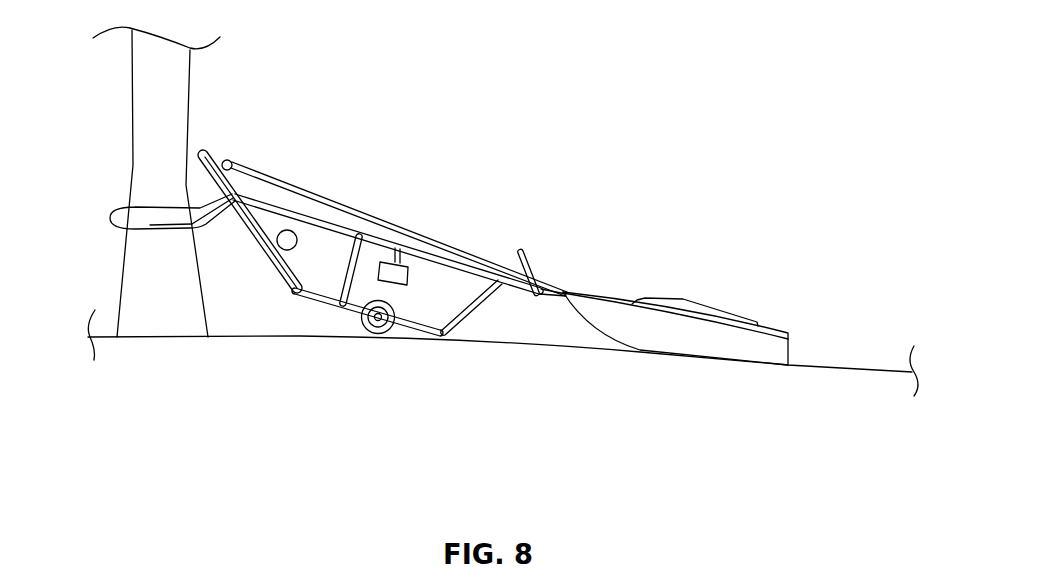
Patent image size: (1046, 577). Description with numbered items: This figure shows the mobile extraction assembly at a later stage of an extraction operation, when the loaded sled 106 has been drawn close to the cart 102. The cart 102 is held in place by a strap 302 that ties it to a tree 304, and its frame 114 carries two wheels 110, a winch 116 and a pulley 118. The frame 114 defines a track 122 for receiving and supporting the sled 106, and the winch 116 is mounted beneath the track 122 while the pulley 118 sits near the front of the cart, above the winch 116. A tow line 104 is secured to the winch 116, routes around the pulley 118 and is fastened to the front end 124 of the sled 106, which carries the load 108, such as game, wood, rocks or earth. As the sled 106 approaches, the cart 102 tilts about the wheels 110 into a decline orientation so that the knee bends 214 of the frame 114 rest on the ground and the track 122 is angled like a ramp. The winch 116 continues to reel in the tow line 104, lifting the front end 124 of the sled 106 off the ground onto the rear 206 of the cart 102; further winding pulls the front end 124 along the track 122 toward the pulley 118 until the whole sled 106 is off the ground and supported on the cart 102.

The cart 102 is at (262, 237).
The tow line 104 is at (300, 185).
The sled 106 is at (660, 333).
The load 108 is at (707, 312).
The wheels 110 is at (368, 333).
The frame 114 is at (333, 302).
The winch 116 is at (345, 235).
The pulley 118 is at (222, 161).
The track 122 is at (287, 246).
The front end of the sled 124 is at (567, 297).
The rear of the cart 206 is at (545, 257).
The knee bends 214 is at (440, 337).
The strap 302 is at (147, 233).
The tree 304 is at (146, 137).